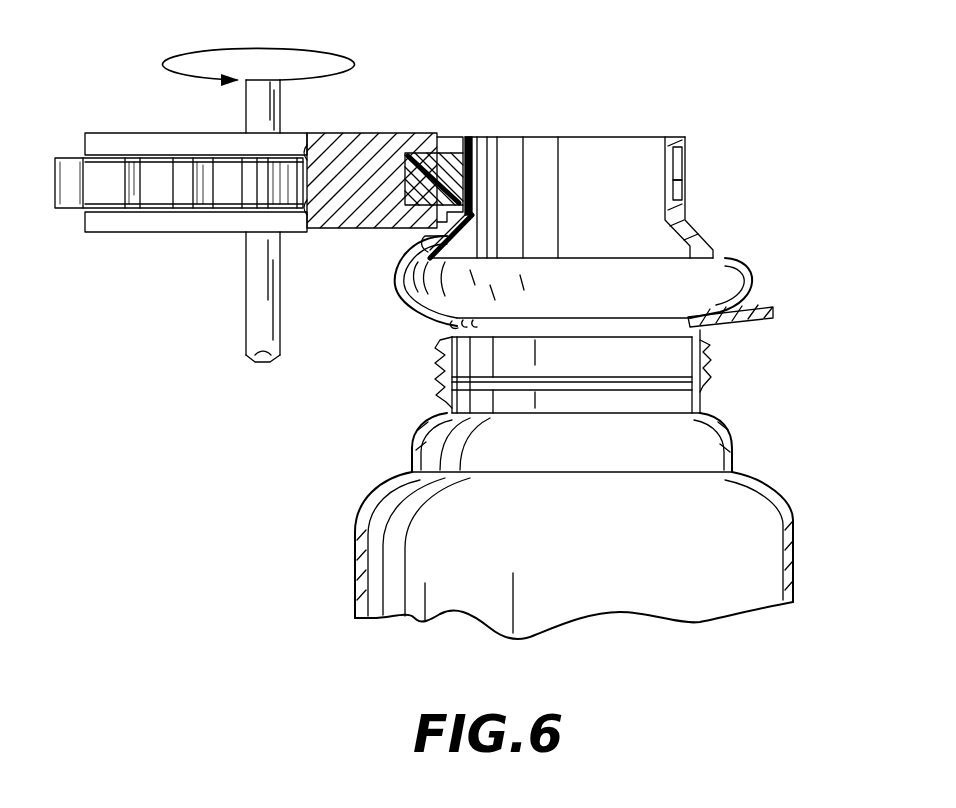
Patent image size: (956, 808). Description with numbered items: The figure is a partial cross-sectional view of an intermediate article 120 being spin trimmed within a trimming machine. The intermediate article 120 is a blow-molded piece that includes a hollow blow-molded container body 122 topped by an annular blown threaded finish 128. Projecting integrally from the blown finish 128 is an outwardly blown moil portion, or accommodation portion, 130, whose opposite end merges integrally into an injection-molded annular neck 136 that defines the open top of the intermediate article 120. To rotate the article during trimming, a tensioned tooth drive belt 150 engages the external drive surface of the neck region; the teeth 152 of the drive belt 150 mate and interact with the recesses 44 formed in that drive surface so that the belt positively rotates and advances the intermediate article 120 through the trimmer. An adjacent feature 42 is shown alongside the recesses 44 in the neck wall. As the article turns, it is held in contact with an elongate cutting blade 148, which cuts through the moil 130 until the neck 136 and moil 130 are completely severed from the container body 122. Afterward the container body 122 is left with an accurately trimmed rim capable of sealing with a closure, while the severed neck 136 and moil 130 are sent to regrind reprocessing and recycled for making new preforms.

The tensioned tooth drive belt 150 is at (110, 193).
The teeth 152 is at (468, 180).
The injection-molded annular neck 136 is at (683, 138).
The vent passage upper portion 42 is at (687, 165).
The recesses 44 is at (687, 183).
The outwardly blown moil portion 130 is at (747, 262).
The elongate cutting blade 148 is at (758, 308).
The annular blown threaded finish 128 is at (708, 362).
The intermediate article 120 is at (733, 437).
The hollow blow-molded container body 122 is at (790, 512).